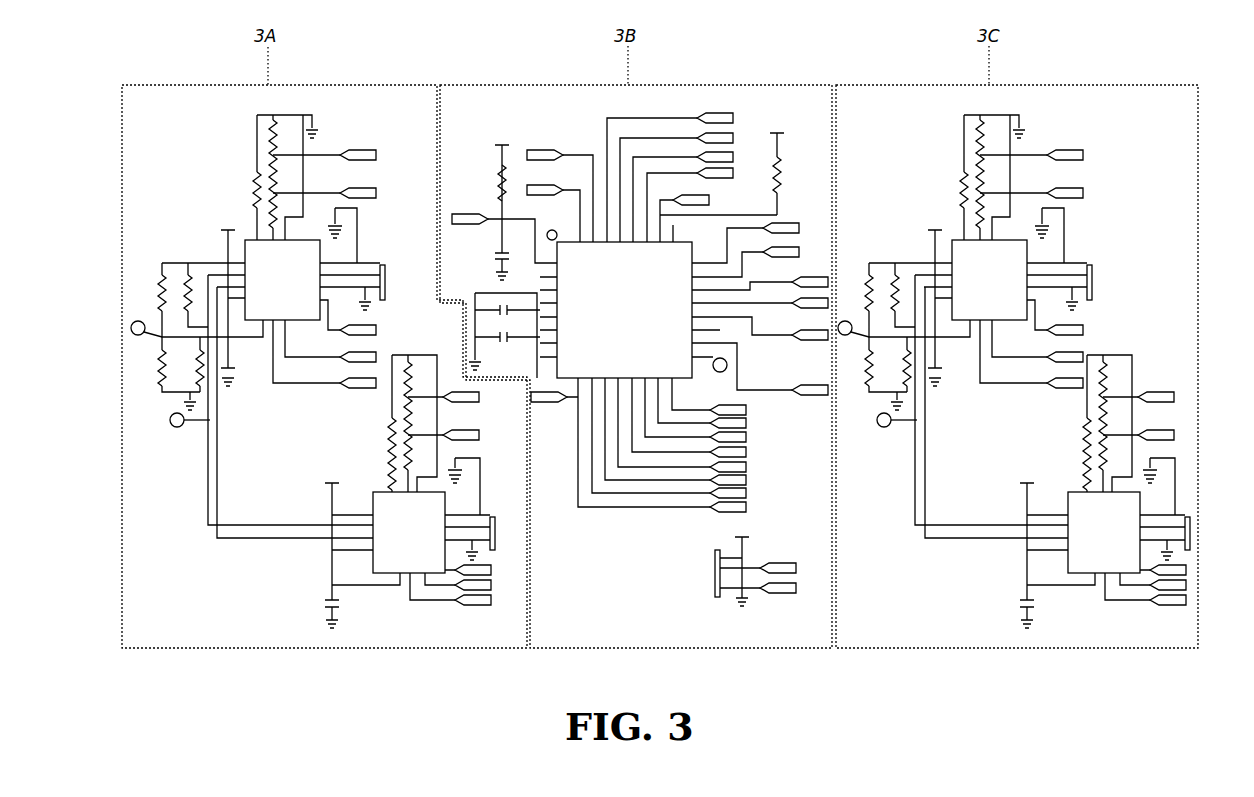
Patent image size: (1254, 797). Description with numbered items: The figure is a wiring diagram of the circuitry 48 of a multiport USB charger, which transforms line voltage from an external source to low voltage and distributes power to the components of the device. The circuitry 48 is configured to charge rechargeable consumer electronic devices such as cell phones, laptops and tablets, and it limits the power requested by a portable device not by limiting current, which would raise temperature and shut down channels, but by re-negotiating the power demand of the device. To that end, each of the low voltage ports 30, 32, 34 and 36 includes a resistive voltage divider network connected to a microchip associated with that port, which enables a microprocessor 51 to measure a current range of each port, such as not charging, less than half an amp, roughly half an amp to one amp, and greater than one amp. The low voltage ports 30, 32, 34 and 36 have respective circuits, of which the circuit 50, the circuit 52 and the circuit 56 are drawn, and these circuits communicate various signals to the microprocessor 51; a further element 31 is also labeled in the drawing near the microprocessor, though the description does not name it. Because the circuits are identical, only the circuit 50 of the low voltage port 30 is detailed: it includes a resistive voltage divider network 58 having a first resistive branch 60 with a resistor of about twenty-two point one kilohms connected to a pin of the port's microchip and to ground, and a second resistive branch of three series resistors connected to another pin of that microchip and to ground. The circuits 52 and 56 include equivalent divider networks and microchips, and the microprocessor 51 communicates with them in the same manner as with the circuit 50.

The circuitry 48 is at (358, 72).
The low voltage port 30 is at (275, 321).
The first resistive branch 60 is at (243, 182).
The resistive voltage divider network 58 is at (384, 176).
The circuit 50 is at (391, 232).
The low voltage port 32 is at (404, 491).
The circuit 52 is at (492, 440).
The microprocessor 51 is at (587, 337).
The pull-up resistor 31 is at (795, 196).
The low voltage port 34 is at (903, 197).
The low voltage port 36 is at (1067, 475).
The circuit 56 is at (1165, 380).